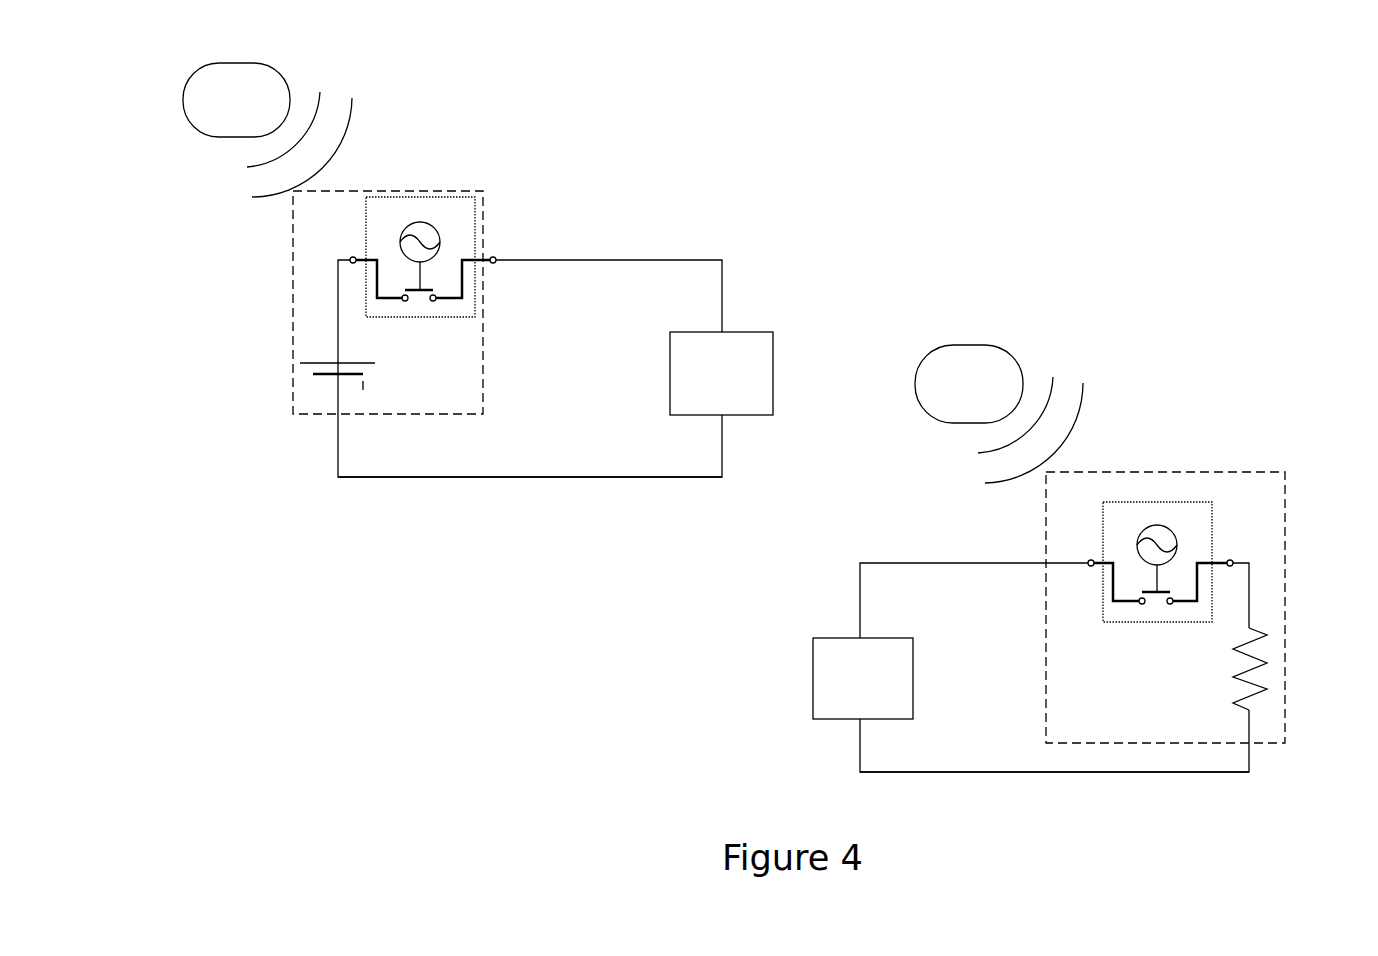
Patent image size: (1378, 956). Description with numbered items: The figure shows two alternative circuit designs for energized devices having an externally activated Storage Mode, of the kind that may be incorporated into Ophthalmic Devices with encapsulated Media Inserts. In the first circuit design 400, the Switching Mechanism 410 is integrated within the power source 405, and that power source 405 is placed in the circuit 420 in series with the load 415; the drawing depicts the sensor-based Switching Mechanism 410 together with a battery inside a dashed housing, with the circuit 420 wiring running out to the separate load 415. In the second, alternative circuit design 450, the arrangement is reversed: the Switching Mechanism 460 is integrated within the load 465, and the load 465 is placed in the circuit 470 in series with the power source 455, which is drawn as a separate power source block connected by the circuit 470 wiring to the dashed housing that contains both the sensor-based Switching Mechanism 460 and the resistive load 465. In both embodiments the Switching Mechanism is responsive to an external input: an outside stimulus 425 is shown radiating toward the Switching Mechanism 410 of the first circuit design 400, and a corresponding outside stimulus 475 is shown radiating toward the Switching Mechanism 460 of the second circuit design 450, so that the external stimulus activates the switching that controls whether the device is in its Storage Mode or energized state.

The circuit design 400 is at (530, 417).
The power source 405 is at (292, 405).
The Switching Mechanism 410 is at (447, 193).
The load 415 is at (775, 362).
The circuit 420 is at (450, 480).
The outside stimulus 425 is at (283, 70).
The circuit design 450 is at (1054, 692).
The power source 455 is at (838, 638).
The Switching Mechanism 460 is at (1240, 482).
The load 465 is at (1210, 745).
The circuit 470 is at (860, 757).
The outside stimulus 475 is at (915, 375).